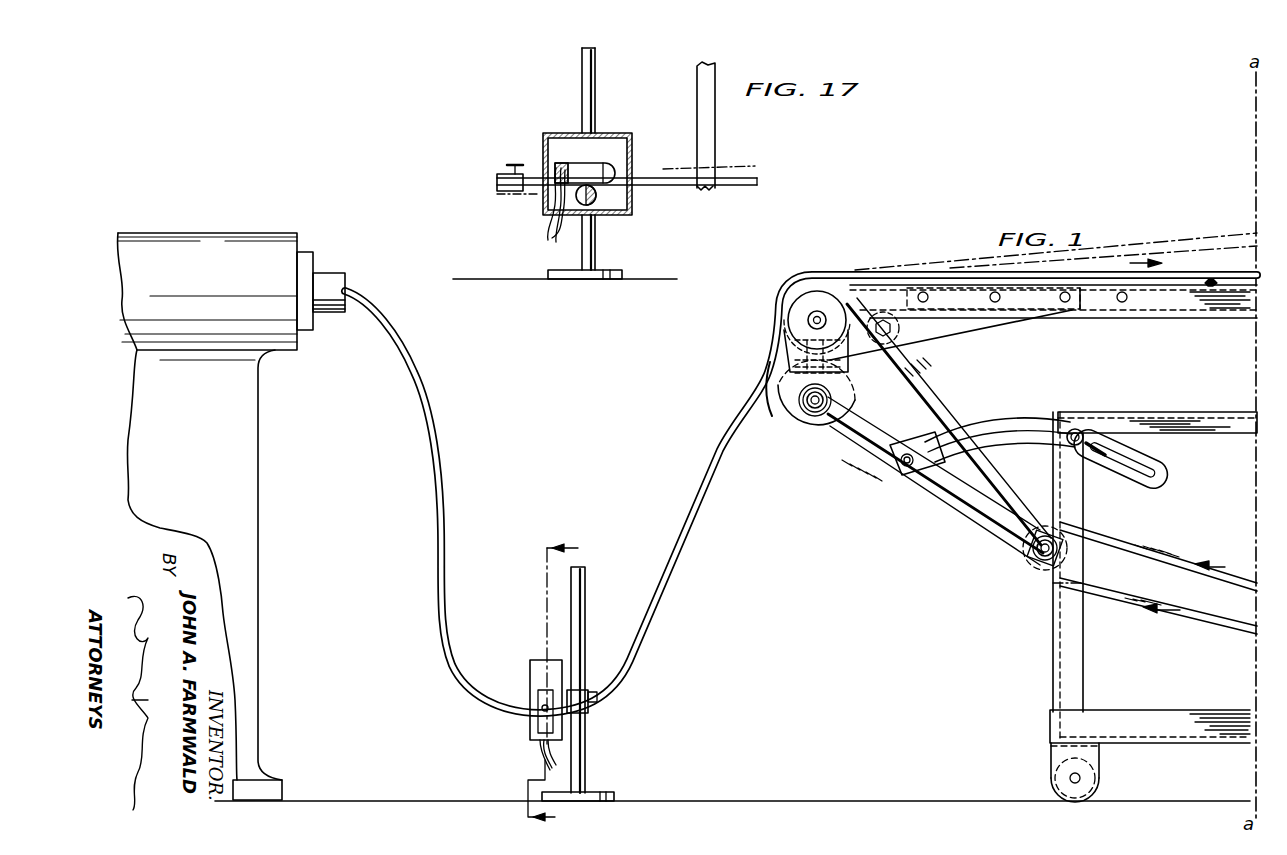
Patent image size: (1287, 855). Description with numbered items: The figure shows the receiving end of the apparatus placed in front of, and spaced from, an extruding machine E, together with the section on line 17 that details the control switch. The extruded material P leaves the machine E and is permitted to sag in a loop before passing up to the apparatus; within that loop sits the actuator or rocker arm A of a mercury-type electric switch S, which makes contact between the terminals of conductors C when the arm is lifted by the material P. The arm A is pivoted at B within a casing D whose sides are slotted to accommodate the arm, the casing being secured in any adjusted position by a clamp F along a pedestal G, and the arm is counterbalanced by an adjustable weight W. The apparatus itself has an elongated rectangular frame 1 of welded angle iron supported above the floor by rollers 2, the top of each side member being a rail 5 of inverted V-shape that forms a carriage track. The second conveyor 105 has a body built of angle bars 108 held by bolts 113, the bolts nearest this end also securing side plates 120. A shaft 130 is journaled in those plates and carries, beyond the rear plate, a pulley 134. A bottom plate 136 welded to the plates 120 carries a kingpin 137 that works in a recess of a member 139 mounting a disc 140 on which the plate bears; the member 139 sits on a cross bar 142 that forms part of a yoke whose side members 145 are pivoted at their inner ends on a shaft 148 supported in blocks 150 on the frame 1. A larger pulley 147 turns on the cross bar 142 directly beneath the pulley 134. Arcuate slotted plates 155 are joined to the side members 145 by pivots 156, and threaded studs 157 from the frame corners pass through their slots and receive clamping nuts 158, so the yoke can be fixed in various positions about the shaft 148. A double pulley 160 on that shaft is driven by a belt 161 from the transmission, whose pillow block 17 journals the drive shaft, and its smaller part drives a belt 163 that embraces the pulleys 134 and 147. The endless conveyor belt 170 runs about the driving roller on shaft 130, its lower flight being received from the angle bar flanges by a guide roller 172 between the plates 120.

In FIG. 17, the pedestal G is at (596, 93).
In FIG. 1, the pedestal G is at (586, 751).
In FIG. 17, the casing D is at (563, 133).
In FIG. 1, the casing D is at (534, 668).
In FIG. 17, the electric switch S is at (600, 165).
In FIG. 17, the material P is at (707, 140).
In FIG. 1, the material P is at (446, 480).
In FIG. 17, the actuator or rocker arm A is at (758, 181).
In FIG. 1, the actuator or rocker arm A is at (540, 708).
In FIG. 17, the adjustable weight W is at (512, 193).
In FIG. 17, the conductors C is at (556, 236).
In FIG. 1, the conductors C is at (545, 758).
In FIG. 17, the pivot B is at (592, 204).
In FIG. 1, the extruding machine E is at (235, 233).
In FIG. 1, the clamp F is at (583, 690).
In FIG. 1, the pillow block 17 is at (565, 685).
In FIG. 1, the frame 1 is at (1050, 645).
In FIG. 1, the rollers 2 is at (1100, 793).
In FIG. 1, the rail 5 is at (1203, 413).
In FIG. 1, the second conveyor 105 is at (1228, 290).
In FIG. 1, the angle bars 108 is at (1188, 305).
In FIG. 1, the bolts 113 is at (989, 297).
In FIG. 1, the side plates 120 is at (960, 324).
In FIG. 1, the shaft 130 is at (814, 318).
In FIG. 1, the pulley 134 is at (830, 307).
In FIG. 1, the bottom plate 136 is at (855, 364).
In FIG. 1, the kingpin 137 is at (787, 373).
In FIG. 1, the member 139 is at (775, 412).
In FIG. 1, the disc 140 is at (785, 370).
In FIG. 1, the cross bar 142 is at (797, 440).
In FIG. 1, the side members 145 is at (950, 494).
In FIG. 1, the pulley 147 is at (818, 440).
In FIG. 1, the shaft 148 is at (1038, 562).
In FIG. 1, the blocks 150 is at (1034, 560).
In FIG. 1, the arcuate slotted plates 155 is at (1017, 422).
In FIG. 1, the pivots 156 is at (910, 454).
In FIG. 1, the threaded studs 157 is at (1081, 431).
In FIG. 1, the clamping nuts 158 is at (1072, 450).
In FIG. 1, the double pulley 160 is at (1058, 534).
In FIG. 1, the belt 161 is at (1132, 550).
In FIG. 1, the belt 163 is at (940, 416).
In FIG. 1, the endless conveyor belt 170 is at (826, 287).
In FIG. 1, the guide roller 172 is at (905, 346).